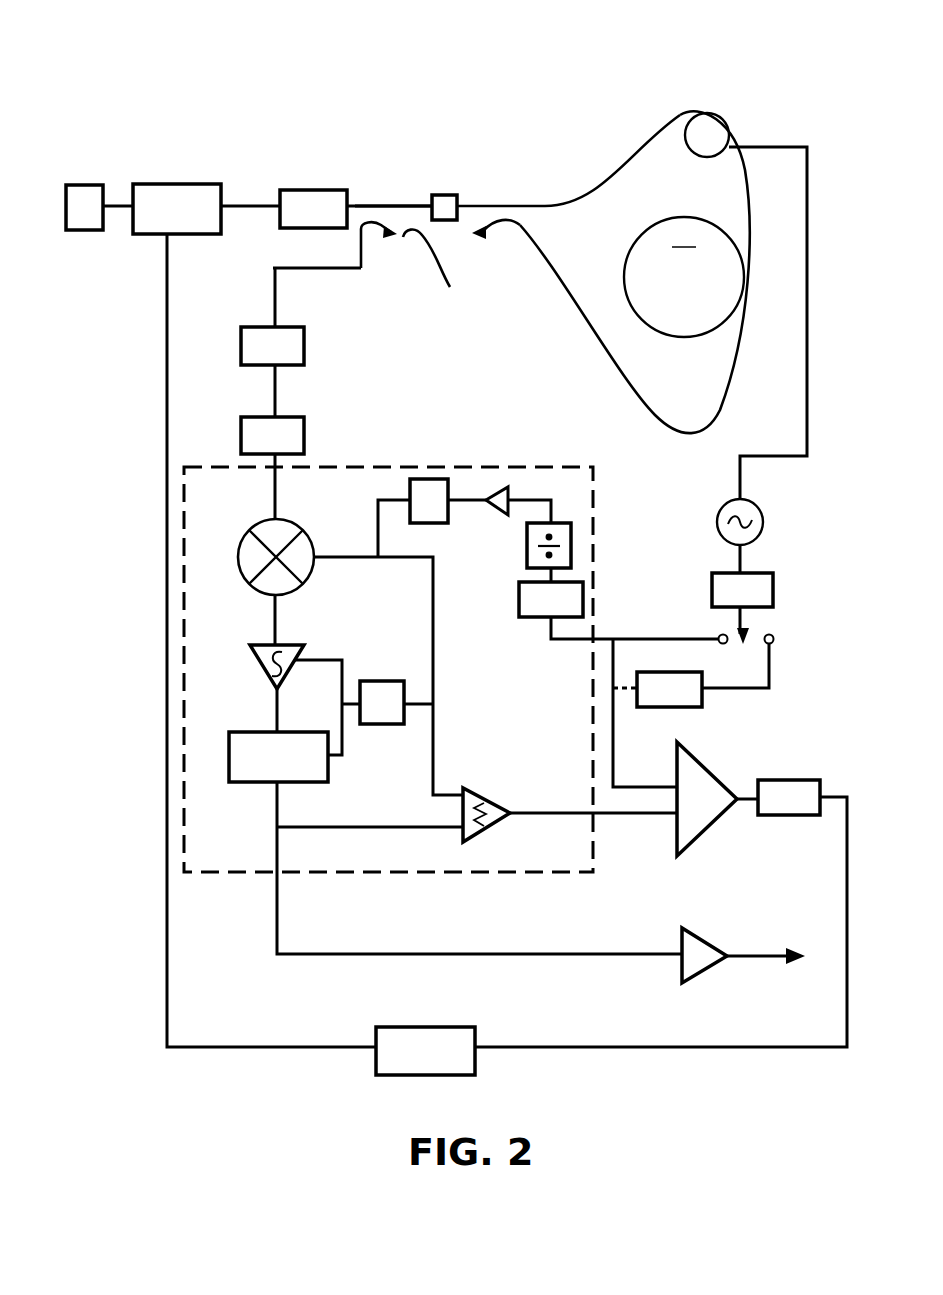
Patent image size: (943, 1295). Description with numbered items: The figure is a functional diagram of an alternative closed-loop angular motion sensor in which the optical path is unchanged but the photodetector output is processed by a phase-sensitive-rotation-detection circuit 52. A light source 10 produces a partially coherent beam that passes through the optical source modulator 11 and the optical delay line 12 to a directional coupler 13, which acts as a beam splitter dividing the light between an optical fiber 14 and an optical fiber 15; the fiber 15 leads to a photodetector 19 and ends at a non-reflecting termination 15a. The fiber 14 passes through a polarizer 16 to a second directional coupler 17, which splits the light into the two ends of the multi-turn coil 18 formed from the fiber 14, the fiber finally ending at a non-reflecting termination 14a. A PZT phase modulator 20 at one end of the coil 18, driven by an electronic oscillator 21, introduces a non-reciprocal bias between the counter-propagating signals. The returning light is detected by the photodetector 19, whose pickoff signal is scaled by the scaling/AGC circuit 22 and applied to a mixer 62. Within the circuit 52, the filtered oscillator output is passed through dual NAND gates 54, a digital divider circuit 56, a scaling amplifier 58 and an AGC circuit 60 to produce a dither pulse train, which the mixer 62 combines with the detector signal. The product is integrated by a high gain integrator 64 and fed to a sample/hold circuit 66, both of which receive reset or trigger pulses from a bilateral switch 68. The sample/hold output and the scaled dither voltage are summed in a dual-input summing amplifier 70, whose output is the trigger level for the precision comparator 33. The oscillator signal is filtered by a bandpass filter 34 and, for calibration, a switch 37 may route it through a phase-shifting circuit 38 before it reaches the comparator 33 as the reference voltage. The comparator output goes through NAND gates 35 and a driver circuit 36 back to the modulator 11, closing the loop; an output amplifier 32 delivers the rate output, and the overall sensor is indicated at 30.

The light source 10 is at (92, 185).
The optical source modulator 11 is at (193, 184).
The optical delay line 12 is at (308, 190).
The directional coupler 13 is at (383, 178).
The optical fiber 14 is at (408, 206).
The non-reflecting termination 14a is at (484, 237).
The optical fiber 15 is at (375, 229).
The non-reflecting termination 15a is at (446, 269).
The polarizer 16 is at (447, 195).
The second directional coupler 17 is at (515, 178).
The multi-turn coil 18 is at (635, 272).
The photodetector 19 is at (243, 327).
The phase modulator 20 is at (724, 114).
The electronic oscillator 21 is at (763, 521).
The scaling/AGC circuit 22 is at (241, 425).
The fiber optic gyroscope system 30 is at (410, 92).
The output amplifier 32 is at (702, 942).
The precision comparator 33 is at (705, 835).
The bandpass filter 34 is at (773, 582).
The NAND gates 35 is at (778, 780).
The driver circuit 36 is at (400, 1075).
The switch 37 is at (760, 634).
The phase-shifting circuit 38 is at (690, 707).
The phase-sensitive-rotation-detection circuit 52 is at (340, 477).
The dual NAND gates 54 is at (583, 597).
The digital divider circuit 56 is at (566, 533).
The amplifier 58 is at (508, 496).
The AGC circuit 60 is at (440, 479).
The mixer 62 is at (247, 541).
The high gain integrator 64 is at (254, 645).
The sample/hold circuit 66 is at (257, 732).
The bilateral switch 68 is at (385, 681).
The dual-input summing amplifier 70 is at (488, 797).